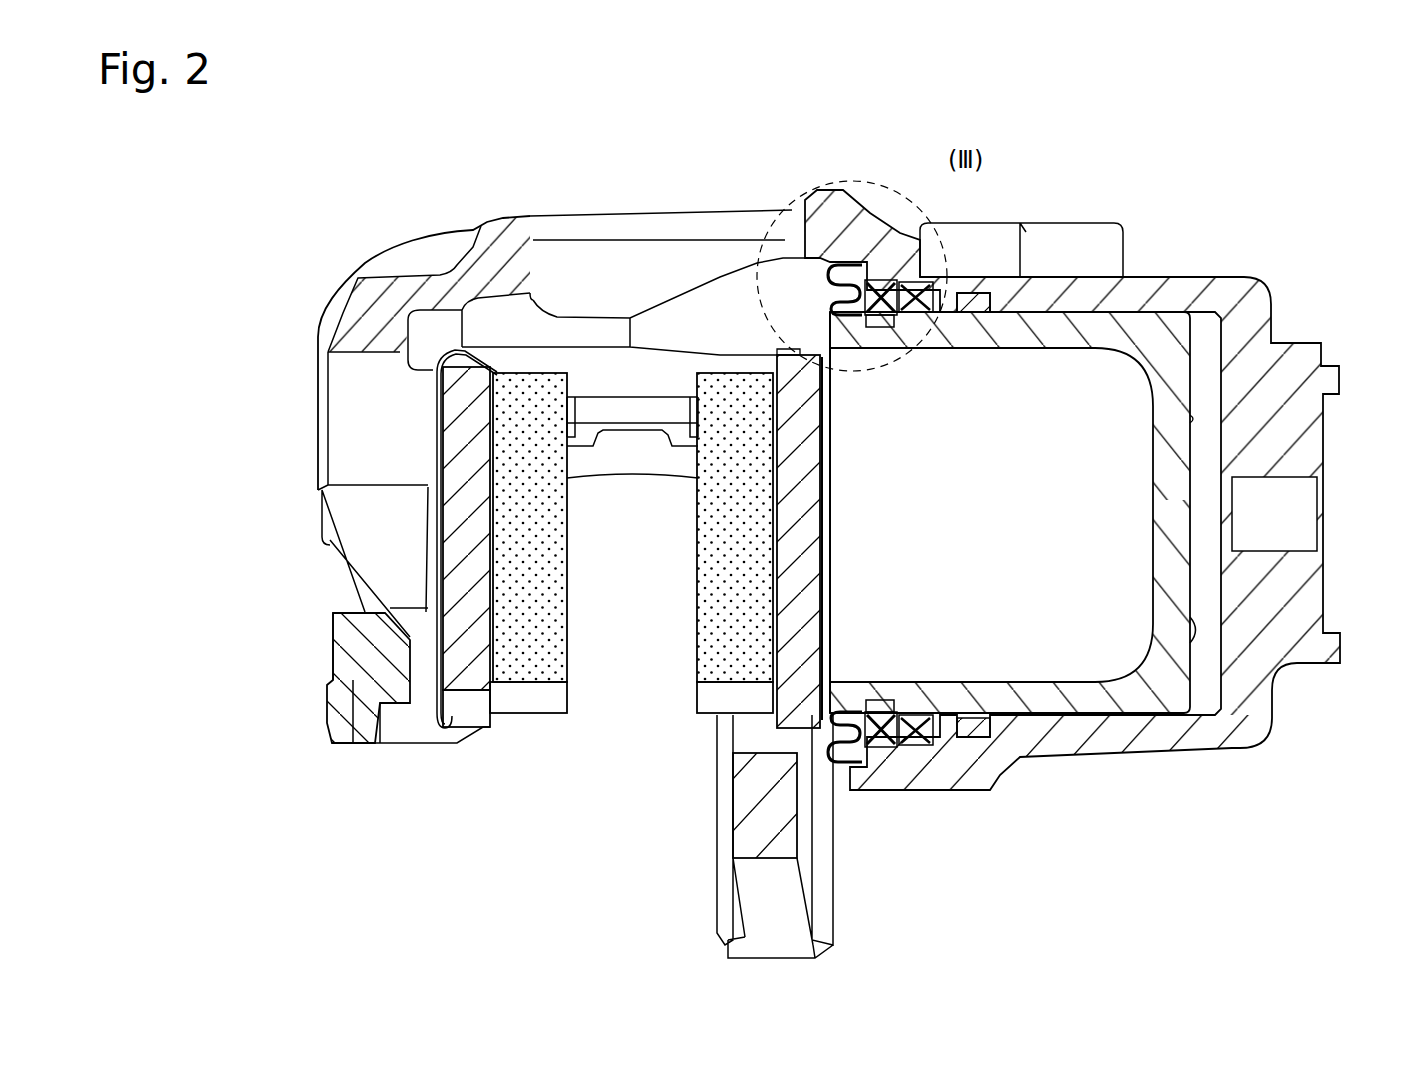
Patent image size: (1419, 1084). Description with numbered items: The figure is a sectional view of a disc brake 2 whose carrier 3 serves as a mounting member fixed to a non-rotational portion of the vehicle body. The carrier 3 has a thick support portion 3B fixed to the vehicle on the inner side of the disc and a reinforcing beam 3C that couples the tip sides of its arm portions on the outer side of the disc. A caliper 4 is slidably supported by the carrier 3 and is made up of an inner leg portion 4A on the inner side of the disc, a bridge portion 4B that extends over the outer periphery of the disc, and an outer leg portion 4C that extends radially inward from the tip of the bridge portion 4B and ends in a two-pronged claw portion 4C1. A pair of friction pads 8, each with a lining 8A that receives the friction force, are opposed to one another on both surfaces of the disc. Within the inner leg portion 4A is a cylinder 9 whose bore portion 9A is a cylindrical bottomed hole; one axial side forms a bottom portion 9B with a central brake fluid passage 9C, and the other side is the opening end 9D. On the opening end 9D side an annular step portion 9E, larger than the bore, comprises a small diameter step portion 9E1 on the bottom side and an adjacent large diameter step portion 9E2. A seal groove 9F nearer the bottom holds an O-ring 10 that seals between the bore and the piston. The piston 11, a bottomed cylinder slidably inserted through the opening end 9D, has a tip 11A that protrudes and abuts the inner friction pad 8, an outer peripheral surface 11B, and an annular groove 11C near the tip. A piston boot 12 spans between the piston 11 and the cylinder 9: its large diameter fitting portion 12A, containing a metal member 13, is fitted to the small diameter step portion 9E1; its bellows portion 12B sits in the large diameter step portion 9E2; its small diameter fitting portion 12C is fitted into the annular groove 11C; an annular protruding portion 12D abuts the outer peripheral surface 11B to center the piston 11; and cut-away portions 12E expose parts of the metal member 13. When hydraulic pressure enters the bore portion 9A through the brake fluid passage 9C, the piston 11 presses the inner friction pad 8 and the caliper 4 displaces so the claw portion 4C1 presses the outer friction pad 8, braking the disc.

The disc brake 2 is at (657, 178).
The carrier 3 is at (534, 785).
The support portion 3B is at (765, 805).
The reinforcing beam 3C is at (370, 640).
The caliper 4 is at (786, 446).
The inner leg portion 4A is at (1148, 297).
The bridge portion 4B is at (570, 235).
The outer leg portion 4C is at (362, 318).
The claw portion 4C1 is at (378, 522).
The friction pad 8 is at (605, 581).
The lining 8A is at (535, 542).
The cylinder 9 is at (1047, 490).
The bore portion 9A is at (1205, 452).
The bottom portion 9B is at (1200, 630).
The brake fluid passage 9C is at (1280, 510).
The opening end 9D is at (810, 262).
The step portion 9E is at (856, 437).
The small diameter step portion 9E1 is at (905, 315).
The large diameter step portion 9E2 is at (830, 270).
The seal groove 9F is at (973, 313).
The O-ring 10 is at (968, 293).
The piston 11 is at (887, 582).
The tip 11A is at (824, 555).
The outer peripheral surface 11B is at (1072, 297).
The annular groove 11C is at (868, 325).
The piston boot 12 is at (910, 522).
The large diameter fitting portion 12A is at (920, 730).
The bellows portion 12B is at (852, 770).
The small diameter fitting portion 12C is at (880, 735).
The annular protruding portion 12D is at (898, 722).
The cut-away portion 12E is at (895, 285).
The metal member 13 is at (932, 764).